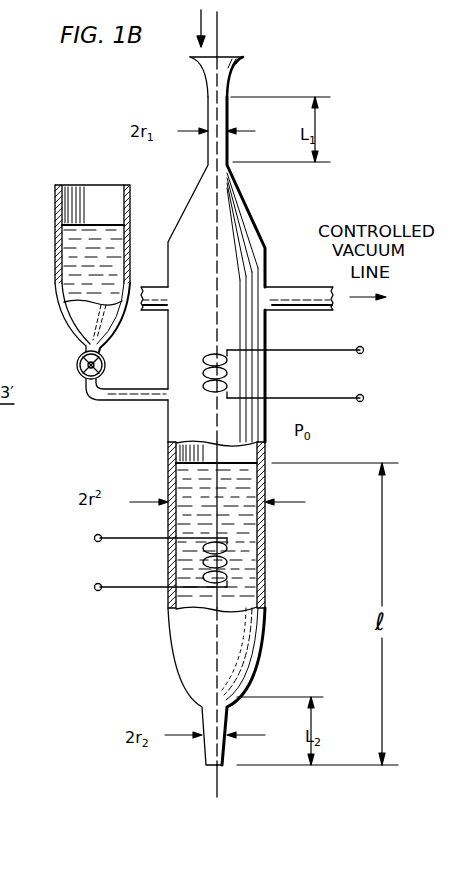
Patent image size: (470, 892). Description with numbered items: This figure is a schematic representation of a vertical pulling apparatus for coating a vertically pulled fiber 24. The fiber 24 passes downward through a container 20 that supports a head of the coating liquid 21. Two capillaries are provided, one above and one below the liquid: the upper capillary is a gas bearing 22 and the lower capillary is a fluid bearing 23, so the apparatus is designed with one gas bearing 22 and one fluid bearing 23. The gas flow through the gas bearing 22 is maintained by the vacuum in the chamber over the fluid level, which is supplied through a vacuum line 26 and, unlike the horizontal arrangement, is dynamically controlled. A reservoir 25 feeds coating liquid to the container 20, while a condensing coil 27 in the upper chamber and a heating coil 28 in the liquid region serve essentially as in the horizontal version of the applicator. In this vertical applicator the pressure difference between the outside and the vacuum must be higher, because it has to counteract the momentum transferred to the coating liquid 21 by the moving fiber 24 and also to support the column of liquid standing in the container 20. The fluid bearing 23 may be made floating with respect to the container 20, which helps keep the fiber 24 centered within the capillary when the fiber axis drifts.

The container 20 is at (266, 522).
The coating liquid 21 is at (245, 590).
The gas bearing 22 is at (207, 163).
The fluid bearing 23 is at (203, 712).
The vertically pulled fiber 24 is at (218, 33).
The reservoir 25 is at (74, 260).
The vacuum line 26 is at (291, 312).
The condensing coil 27 is at (207, 355).
The heating coil 28 is at (230, 561).